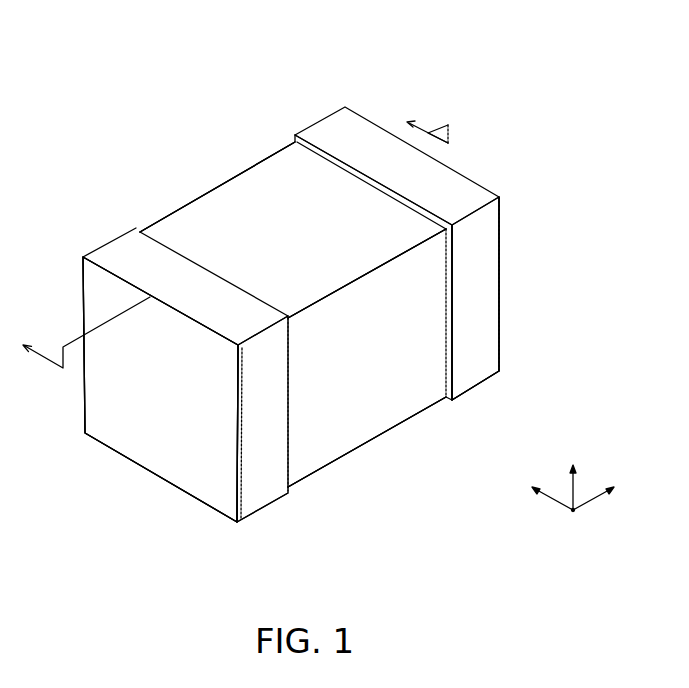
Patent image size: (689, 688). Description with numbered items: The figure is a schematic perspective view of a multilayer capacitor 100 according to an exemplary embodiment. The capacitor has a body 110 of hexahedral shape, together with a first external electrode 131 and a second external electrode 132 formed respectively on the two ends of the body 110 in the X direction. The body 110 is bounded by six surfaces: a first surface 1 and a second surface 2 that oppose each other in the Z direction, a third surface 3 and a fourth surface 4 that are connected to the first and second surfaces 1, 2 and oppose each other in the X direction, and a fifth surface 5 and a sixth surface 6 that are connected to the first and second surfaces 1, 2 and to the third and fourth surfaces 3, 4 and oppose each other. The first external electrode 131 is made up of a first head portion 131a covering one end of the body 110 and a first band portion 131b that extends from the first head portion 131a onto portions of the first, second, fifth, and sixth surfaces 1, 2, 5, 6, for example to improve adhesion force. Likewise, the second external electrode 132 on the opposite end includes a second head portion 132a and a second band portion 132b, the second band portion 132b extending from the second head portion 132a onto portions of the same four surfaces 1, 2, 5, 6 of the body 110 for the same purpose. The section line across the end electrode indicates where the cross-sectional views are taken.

The multilayer capacitor 100 is at (153, 49).
The body 110 is at (227, 201).
The first surface 1 is at (362, 449).
The second surface 2 is at (288, 186).
The third surface 3 is at (123, 390).
The fourth surface 4 is at (475, 177).
The fifth surface 5 is at (416, 358).
The sixth surface 6 is at (165, 211).
The first external electrode 131 is at (122, 527).
The first head portion 131a is at (206, 489).
The first band portion 131b is at (254, 492).
The second external electrode 132 is at (585, 296).
The second head portion 132a is at (500, 309).
The second band portion 132b is at (482, 348).